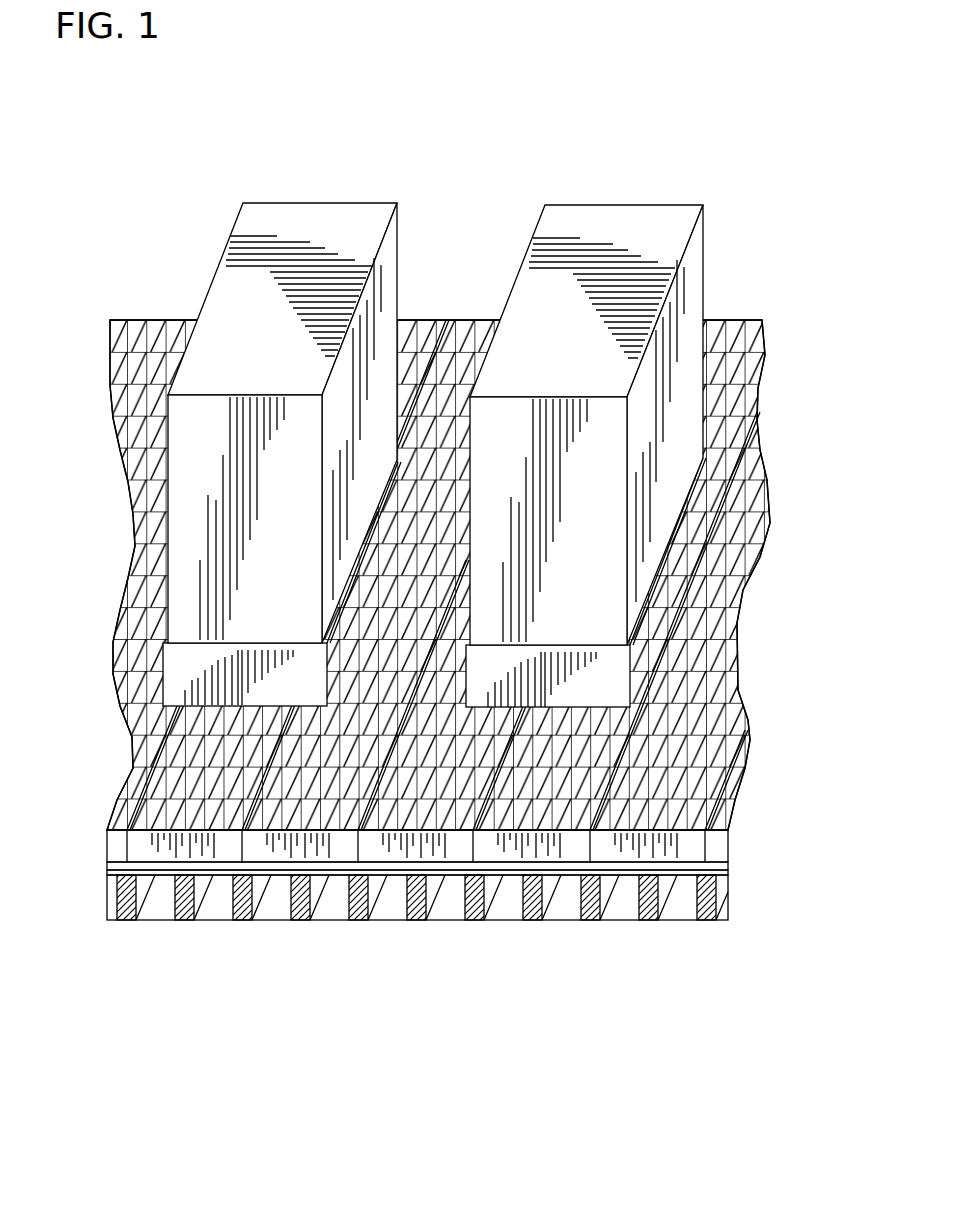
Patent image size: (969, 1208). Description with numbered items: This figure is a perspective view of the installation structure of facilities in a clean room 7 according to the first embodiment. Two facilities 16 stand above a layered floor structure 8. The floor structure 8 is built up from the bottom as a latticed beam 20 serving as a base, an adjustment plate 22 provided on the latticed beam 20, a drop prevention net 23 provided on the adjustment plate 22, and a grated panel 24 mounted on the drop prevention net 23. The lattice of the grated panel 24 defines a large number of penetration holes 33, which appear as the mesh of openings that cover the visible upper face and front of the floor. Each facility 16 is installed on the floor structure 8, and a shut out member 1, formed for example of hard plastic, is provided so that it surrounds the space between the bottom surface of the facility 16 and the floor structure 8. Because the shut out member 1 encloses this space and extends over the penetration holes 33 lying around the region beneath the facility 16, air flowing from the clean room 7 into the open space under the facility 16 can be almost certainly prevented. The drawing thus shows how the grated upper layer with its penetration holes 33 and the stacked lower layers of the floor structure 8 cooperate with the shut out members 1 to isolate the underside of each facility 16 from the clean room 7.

The shut out member 1 is at (172, 685).
The clean room 7 is at (440, 455).
The floor structure 8 is at (492, 925).
The facility 16 is at (302, 217).
The latticed beam 20 is at (712, 895).
The adjustment plate 22 is at (728, 872).
The drop prevention net 23 is at (707, 867).
The grated panel 24 is at (697, 852).
The penetration hole 33 is at (703, 690).